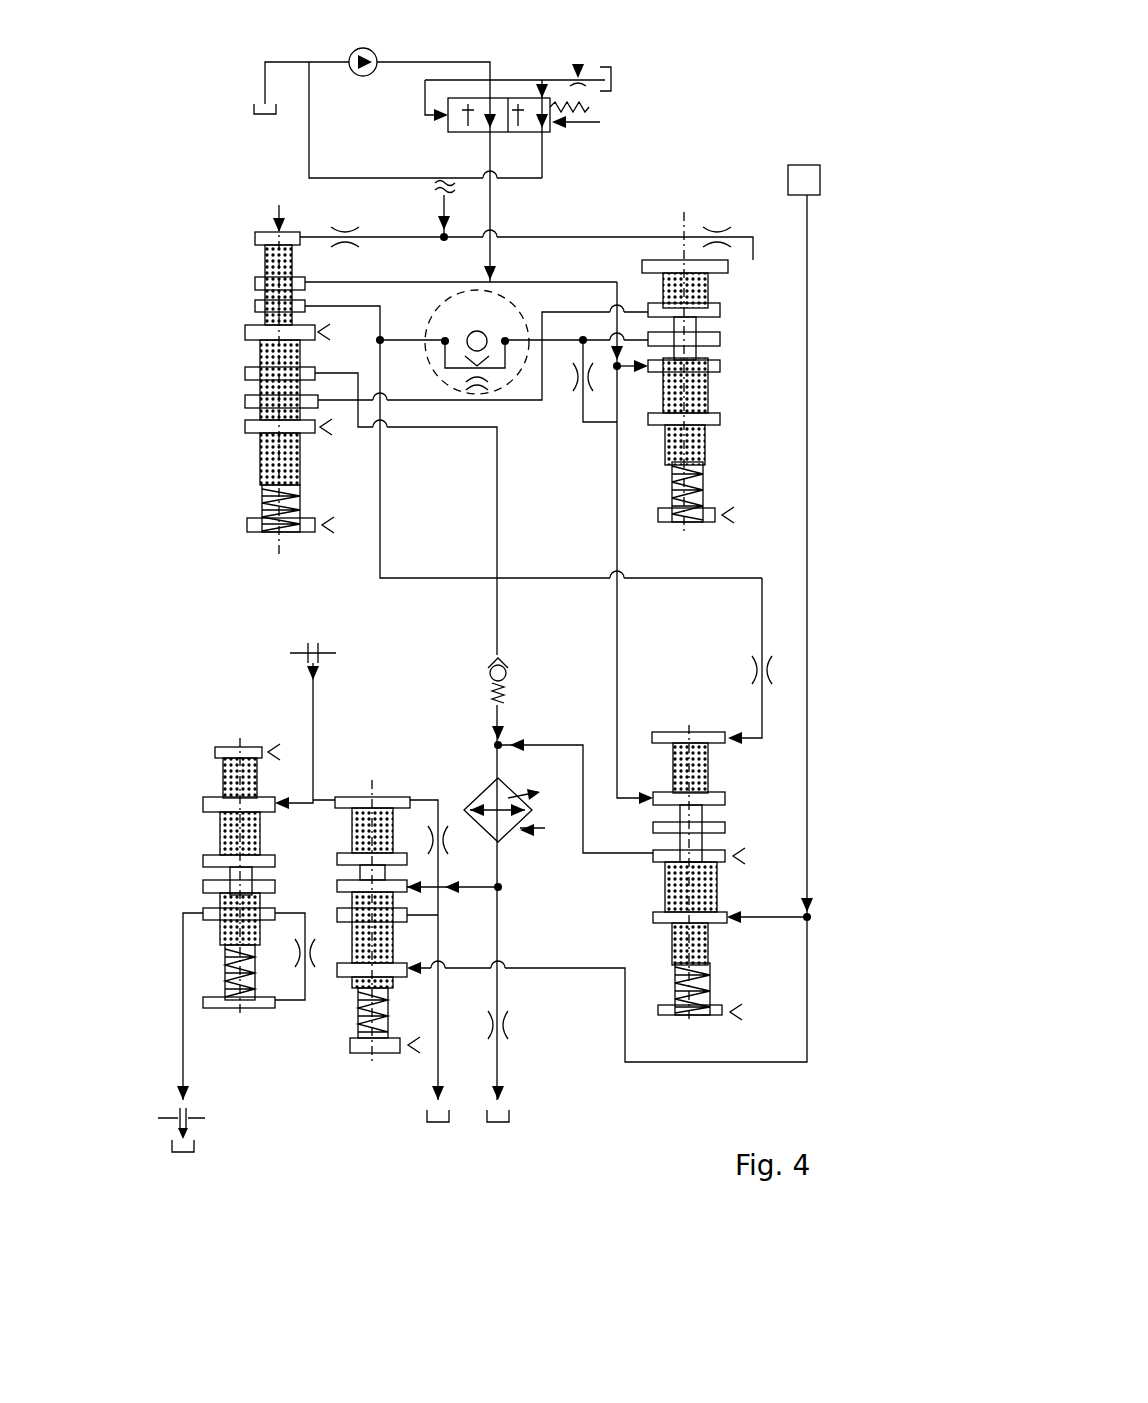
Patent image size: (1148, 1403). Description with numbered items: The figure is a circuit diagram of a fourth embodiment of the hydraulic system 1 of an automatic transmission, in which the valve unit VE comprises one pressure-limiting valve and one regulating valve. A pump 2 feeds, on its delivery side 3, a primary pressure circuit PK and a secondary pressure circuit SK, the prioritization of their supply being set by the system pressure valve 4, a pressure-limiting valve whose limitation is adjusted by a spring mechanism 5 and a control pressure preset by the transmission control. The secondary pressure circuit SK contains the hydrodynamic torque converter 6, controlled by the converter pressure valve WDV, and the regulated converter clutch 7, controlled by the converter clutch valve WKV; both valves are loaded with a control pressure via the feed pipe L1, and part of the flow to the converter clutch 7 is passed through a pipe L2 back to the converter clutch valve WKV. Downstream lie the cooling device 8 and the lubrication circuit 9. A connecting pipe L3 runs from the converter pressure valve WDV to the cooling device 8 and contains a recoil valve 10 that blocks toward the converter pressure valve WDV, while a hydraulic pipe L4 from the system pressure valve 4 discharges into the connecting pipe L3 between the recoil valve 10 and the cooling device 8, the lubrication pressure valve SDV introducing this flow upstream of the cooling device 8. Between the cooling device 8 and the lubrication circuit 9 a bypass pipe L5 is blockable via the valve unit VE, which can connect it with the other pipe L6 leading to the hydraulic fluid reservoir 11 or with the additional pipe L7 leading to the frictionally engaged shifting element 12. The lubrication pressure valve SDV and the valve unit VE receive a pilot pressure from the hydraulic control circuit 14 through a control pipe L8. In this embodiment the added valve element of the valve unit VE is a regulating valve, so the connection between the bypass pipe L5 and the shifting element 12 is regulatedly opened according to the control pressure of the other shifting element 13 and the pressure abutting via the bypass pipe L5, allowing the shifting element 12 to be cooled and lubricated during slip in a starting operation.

The hydraulic system 1 is at (222, 183).
The pump 2 is at (352, 52).
The delivery side 3 is at (405, 62).
The system pressure valve 4 is at (448, 125).
The spring mechanism 5 is at (598, 107).
The hydrodynamic torque converter 6 is at (470, 378).
The regulated converter clutch 7 is at (480, 331).
The cooling device 8 is at (484, 790).
The lubrication circuit 9 is at (508, 1025).
The recoil valve 10 is at (520, 678).
The hydraulic fluid reservoir 11 is at (256, 104).
The frictionally engaged shifting element 12 is at (165, 1117).
The other shifting element 13 is at (292, 642).
The hydraulic control circuit 14 is at (813, 180).
The converter pressure valve WDV is at (227, 359).
The converter clutch valve WKV is at (783, 415).
The secondary pressure circuit SK is at (590, 228).
The primary pressure circuit PK is at (580, 62).
The feed pipe L1 is at (440, 225).
The pipe L2 is at (583, 428).
The connecting pipe L3 is at (495, 590).
The hydraulic pipe L4 is at (615, 640).
The bypass pipe L5 is at (475, 890).
The other pipe L6 is at (438, 1030).
The additional pipe L7 is at (183, 1005).
The control pipe L8 is at (810, 678).
The valve unit VE is at (178, 682).
The lubrication pressure valve SDV is at (760, 920).